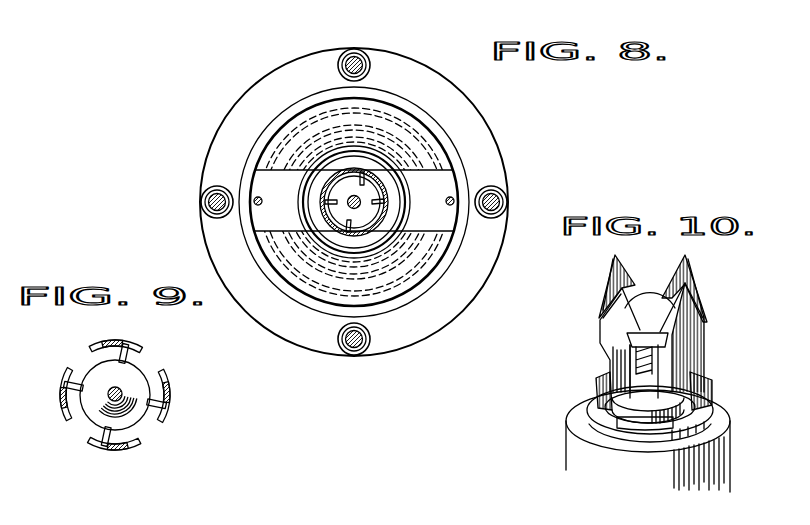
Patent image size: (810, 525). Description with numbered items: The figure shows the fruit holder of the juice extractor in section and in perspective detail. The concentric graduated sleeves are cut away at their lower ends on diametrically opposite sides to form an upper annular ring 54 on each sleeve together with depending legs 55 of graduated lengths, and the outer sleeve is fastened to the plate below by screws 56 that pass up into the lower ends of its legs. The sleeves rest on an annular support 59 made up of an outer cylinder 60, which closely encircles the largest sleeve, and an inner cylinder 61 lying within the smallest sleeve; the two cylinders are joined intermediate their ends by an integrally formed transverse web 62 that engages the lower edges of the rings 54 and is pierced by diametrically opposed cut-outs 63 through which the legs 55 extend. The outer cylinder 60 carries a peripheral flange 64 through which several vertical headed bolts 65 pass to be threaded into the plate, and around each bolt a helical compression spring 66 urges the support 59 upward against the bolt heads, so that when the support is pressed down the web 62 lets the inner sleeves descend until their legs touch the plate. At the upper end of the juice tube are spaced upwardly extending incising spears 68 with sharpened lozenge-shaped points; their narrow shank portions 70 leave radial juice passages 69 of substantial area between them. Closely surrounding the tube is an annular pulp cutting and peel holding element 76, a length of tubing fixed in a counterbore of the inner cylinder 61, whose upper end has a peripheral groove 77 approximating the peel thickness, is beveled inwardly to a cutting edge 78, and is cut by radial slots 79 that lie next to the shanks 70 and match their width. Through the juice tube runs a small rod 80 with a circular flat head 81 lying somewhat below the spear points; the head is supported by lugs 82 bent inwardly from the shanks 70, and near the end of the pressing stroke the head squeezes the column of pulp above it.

In FIG. 8, the upper annular ring 54 is at (412, 280).
In FIG. 8, the depending legs 55 is at (451, 181).
In FIG. 8, the screws 56 is at (452, 198).
In FIG. 8, the annular support 59 is at (290, 350).
In FIG. 8, the outer cylinder 60 is at (443, 138).
In FIG. 10, the inner cylinder 61 is at (716, 420).
In FIG. 8, the transverse web 62 is at (388, 291).
In FIG. 8, the cut-outs 63 is at (264, 170).
In FIG. 8, the peripheral flange 64 is at (458, 291).
In FIG. 8, the headed bolts 65 is at (353, 57).
In FIG. 8, the helical compression spring 66 is at (340, 70).
In FIG. 10, the incising knives or spears 68 is at (712, 303).
In FIG. 9, the radial juice passages 69 is at (87, 421).
In FIG. 10, the radial juice passages 69 is at (628, 357).
In FIG. 9, the shank portions 70 is at (168, 393).
In FIG. 10, the pulp cutting and peel holding element 76 is at (688, 420).
In FIG. 10, the peripheral groove 77 is at (650, 429).
In FIG. 10, the cutting edge 78 is at (679, 422).
In FIG. 10, the radial slots 79 is at (718, 431).
In FIG. 9, the rod 80 is at (123, 391).
In FIG. 9, the circular flat head 81 is at (147, 427).
In FIG. 9, the lugs 82 is at (85, 372).